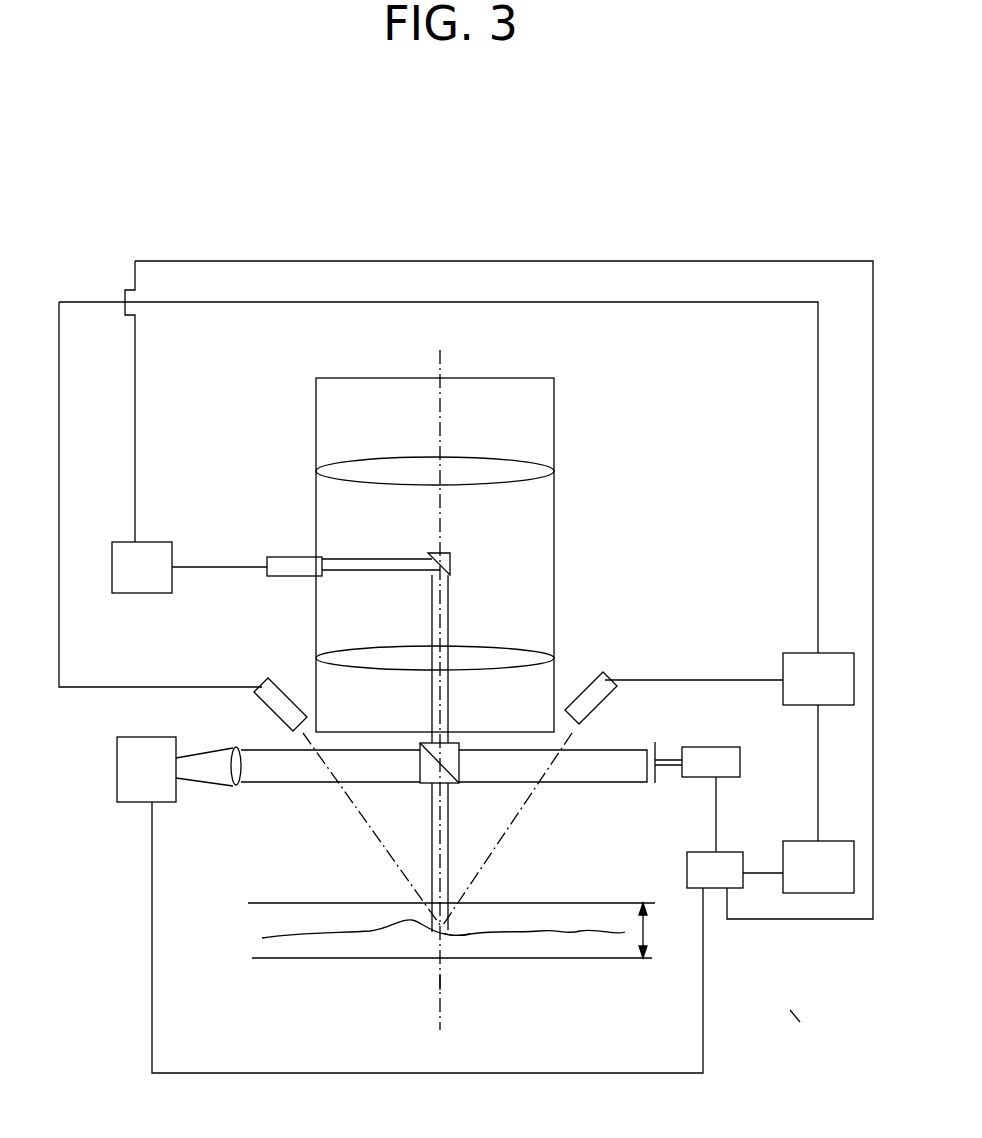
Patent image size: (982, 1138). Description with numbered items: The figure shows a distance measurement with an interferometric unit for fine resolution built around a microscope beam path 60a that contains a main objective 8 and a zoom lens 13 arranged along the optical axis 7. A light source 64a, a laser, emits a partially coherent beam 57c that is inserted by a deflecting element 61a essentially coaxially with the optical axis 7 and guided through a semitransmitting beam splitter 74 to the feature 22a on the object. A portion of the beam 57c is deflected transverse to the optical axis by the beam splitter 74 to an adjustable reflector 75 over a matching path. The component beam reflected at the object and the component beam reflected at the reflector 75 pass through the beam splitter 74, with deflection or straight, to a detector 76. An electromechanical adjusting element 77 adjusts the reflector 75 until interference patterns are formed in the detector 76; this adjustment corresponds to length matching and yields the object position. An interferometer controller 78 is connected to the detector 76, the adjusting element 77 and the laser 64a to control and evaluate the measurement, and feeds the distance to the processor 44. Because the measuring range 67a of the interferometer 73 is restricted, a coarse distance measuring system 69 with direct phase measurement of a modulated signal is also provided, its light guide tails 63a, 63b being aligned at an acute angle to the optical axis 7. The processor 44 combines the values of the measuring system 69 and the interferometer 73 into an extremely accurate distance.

The microscope beam path 60a is at (554, 568).
The zoom lens 13 is at (554, 471).
The main objective 8 is at (554, 658).
The deflecting element 61a is at (452, 566).
The partially coherent beam 57c is at (355, 558).
The light source 64a is at (130, 593).
The light guide output 63a is at (273, 681).
The light guide input 63b is at (612, 702).
The distance measuring system 69 is at (790, 653).
The detector 76 is at (117, 772).
The semitransmitting beam splitter 74 is at (418, 785).
The adjustable reflector 75 is at (662, 785).
The electromechanical adjusting element 77 is at (742, 758).
The interferometer controller 78 is at (716, 888).
The processor 44 is at (832, 893).
The measuring range 67a is at (653, 930).
The optical axis 7 is at (435, 981).
The feature 22a is at (456, 935).
The interferometer 73 is at (797, 1018).